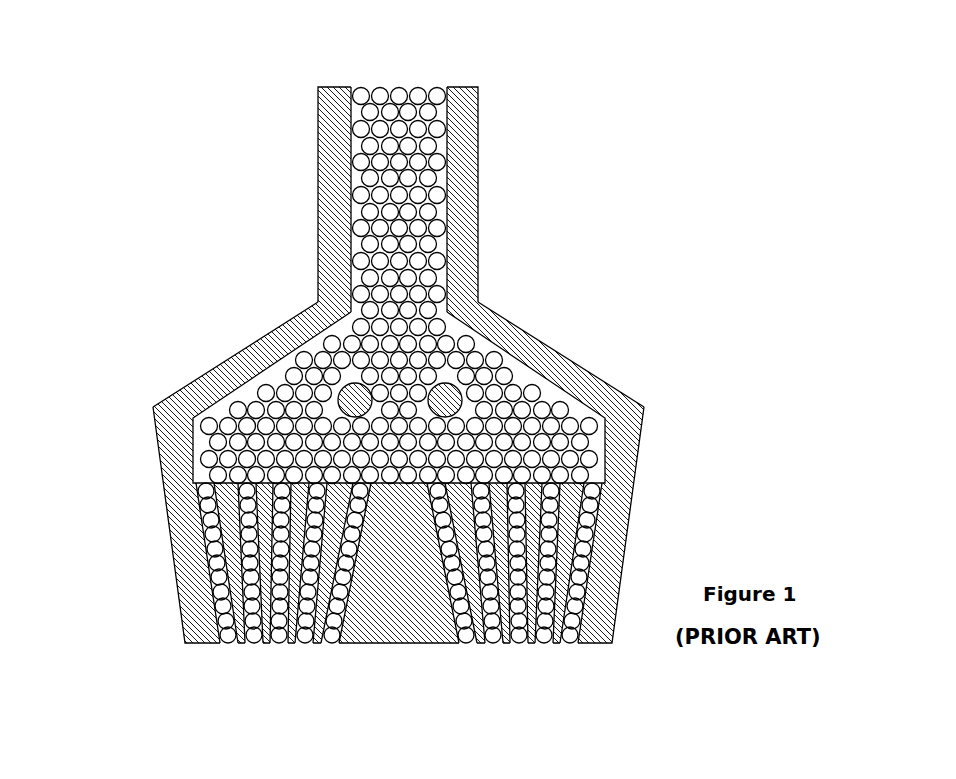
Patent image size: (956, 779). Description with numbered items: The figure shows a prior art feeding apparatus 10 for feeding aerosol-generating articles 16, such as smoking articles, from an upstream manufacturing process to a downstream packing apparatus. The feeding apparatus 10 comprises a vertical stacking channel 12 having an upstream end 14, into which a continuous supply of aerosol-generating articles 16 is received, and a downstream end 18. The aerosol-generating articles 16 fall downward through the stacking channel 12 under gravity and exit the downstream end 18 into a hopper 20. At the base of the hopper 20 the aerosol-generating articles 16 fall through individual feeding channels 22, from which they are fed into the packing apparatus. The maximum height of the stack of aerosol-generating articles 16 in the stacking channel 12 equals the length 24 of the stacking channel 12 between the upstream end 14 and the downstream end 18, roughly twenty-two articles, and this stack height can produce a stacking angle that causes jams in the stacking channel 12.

The feeding apparatus 10 is at (645, 470).
The stacking channel 12 is at (120, 93).
The upstream end 14 is at (341, 90).
The aerosol-generating articles 16 is at (419, 95).
The downstream end 18 is at (455, 312).
The hopper 20 is at (120, 308).
The feeding channels 22 is at (305, 643).
The length 24 is at (502, 301).